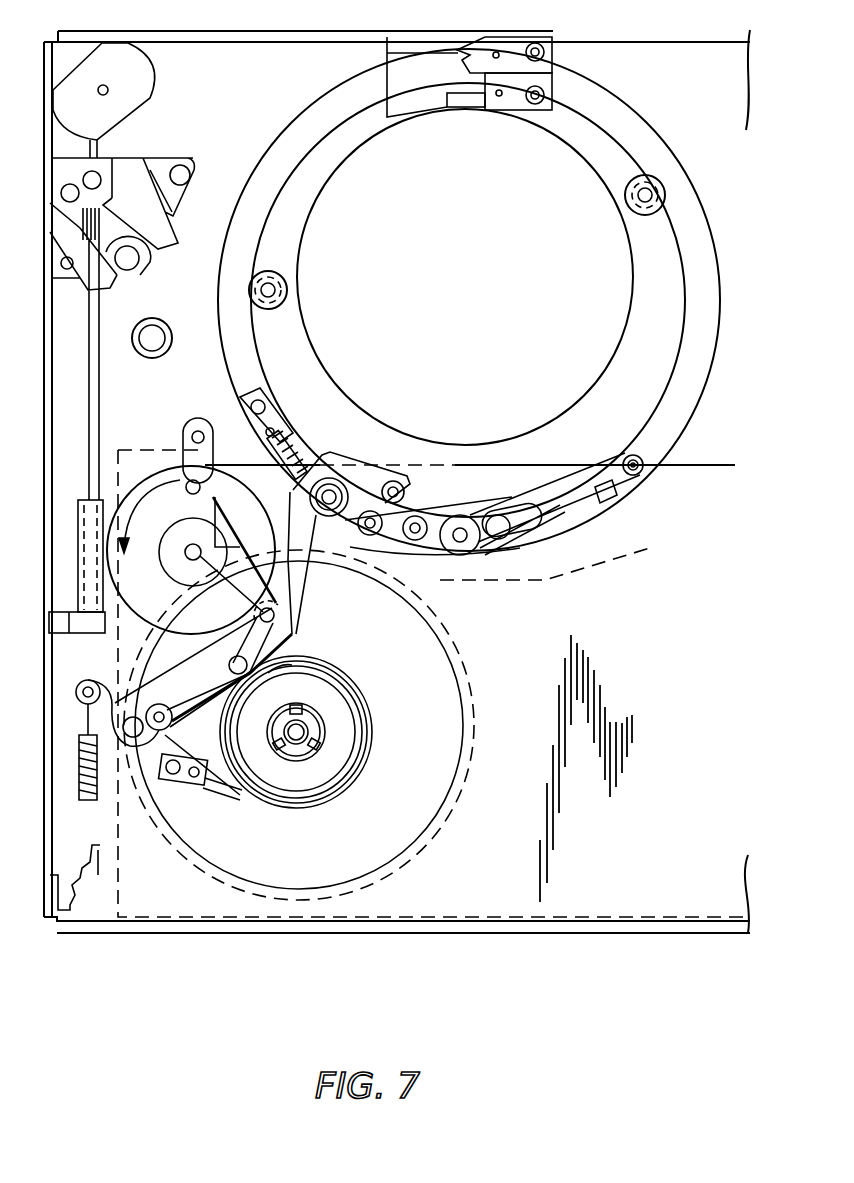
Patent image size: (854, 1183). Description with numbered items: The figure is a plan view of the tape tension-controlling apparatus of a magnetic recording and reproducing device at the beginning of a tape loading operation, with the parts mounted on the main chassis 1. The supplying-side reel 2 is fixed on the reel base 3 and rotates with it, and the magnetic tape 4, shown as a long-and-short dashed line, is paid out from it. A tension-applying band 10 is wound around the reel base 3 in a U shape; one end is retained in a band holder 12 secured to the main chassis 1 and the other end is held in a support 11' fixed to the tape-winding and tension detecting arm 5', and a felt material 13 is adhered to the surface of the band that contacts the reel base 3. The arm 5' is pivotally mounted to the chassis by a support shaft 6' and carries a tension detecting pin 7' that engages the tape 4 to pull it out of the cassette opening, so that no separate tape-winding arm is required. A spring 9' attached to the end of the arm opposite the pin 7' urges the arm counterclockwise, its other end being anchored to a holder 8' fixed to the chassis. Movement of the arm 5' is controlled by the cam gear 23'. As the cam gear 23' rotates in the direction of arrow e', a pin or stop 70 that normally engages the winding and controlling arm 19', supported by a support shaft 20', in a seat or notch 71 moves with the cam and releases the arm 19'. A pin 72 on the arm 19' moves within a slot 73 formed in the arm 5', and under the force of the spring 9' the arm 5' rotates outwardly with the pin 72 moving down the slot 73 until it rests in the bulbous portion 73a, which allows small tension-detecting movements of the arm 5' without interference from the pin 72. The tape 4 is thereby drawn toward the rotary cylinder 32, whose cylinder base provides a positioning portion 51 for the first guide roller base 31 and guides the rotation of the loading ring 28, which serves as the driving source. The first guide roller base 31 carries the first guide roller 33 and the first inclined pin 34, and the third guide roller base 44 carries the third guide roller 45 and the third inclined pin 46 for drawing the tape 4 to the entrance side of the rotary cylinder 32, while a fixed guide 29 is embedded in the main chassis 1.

The main chassis 1 is at (52, 338).
The supplying-side reel 2 is at (266, 902).
The reel base 3 is at (300, 775).
The magnetic tape 4 is at (700, 468).
The tape-winding and tension detecting arm 5' is at (288, 589).
The support shaft 6' is at (115, 696).
The tension detecting pin 7' is at (422, 456).
The holder 8' is at (78, 904).
The spring 9' is at (49, 752).
The tension-applying band 10 is at (215, 795).
The support 11' is at (169, 728).
The band holder 12 is at (178, 784).
The felt material 13 is at (348, 775).
The winding and controlling arm 19' is at (193, 655).
The support shaft 20' is at (194, 422).
The cam gear 23' is at (191, 523).
The loading ring 28 is at (305, 110).
The fixed guide 29 is at (161, 318).
The first guide roller base 31 is at (380, 485).
The rotary cylinder 32 is at (598, 170).
The first guide roller 33 is at (250, 512).
The first inclined pin 34 is at (400, 553).
The third guide roller base 44 is at (503, 518).
The third guide roller 45 is at (462, 556).
The third inclined pin 46 is at (530, 535).
The positioning portion 51 is at (541, 37).
The pin or stop 70 is at (186, 487).
The seat or notch 71 is at (216, 495).
The pin 72 is at (278, 621).
The slot 73 is at (285, 636).
The bulbous portion 73a is at (300, 668).
The direction of rotation arrow e' is at (149, 516).